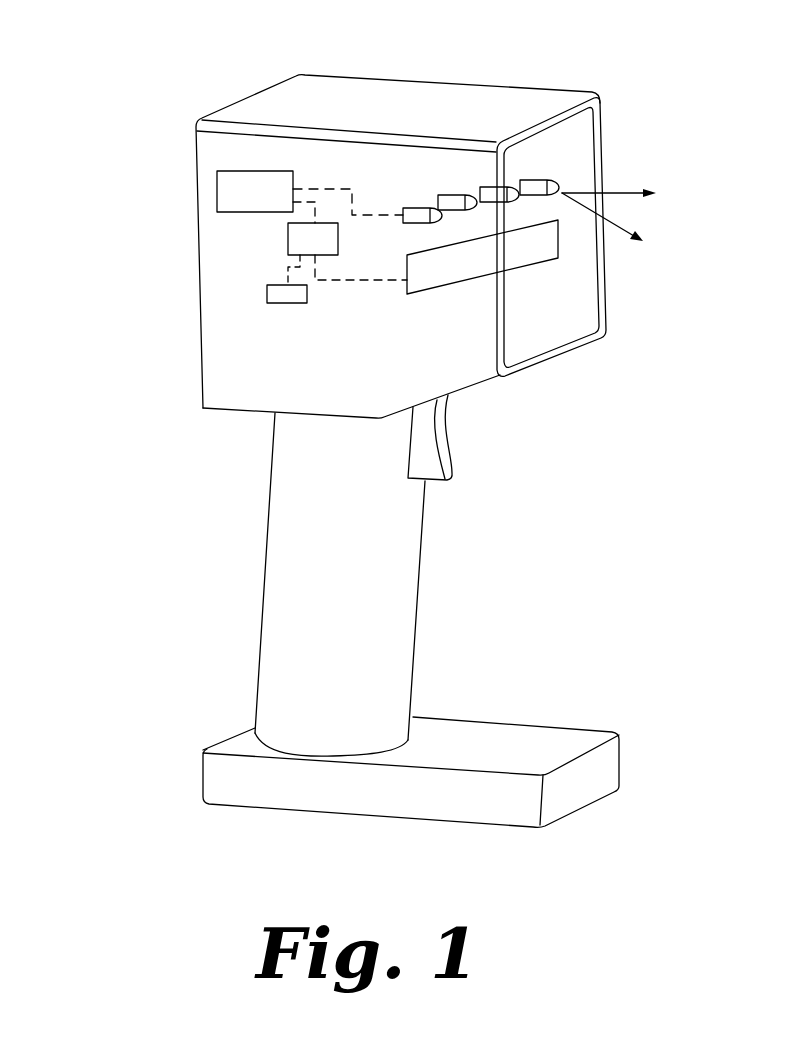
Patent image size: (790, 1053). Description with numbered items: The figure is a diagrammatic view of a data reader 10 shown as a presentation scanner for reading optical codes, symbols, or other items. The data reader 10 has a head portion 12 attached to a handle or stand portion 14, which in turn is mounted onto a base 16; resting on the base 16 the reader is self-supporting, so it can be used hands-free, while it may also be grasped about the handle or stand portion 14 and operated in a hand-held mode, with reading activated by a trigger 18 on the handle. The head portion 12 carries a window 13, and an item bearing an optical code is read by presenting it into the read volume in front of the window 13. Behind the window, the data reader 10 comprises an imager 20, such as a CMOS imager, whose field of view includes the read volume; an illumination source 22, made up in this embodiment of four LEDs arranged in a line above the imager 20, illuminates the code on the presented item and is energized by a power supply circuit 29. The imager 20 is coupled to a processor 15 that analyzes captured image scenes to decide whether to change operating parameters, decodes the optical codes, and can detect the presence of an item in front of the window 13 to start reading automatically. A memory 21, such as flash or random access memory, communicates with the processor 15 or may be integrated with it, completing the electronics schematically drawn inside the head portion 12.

The data reader 10 is at (186, 78).
The head portion 12 is at (222, 252).
The window 13 is at (550, 320).
The handle or stand portion 14 is at (288, 578).
The processor 15 is at (288, 240).
The base 16 is at (380, 800).
The trigger 18 is at (447, 458).
The imager 20 is at (451, 288).
The memory 21 is at (287, 304).
The illumination source 22 is at (452, 195).
The power supply circuit 29 is at (217, 191).